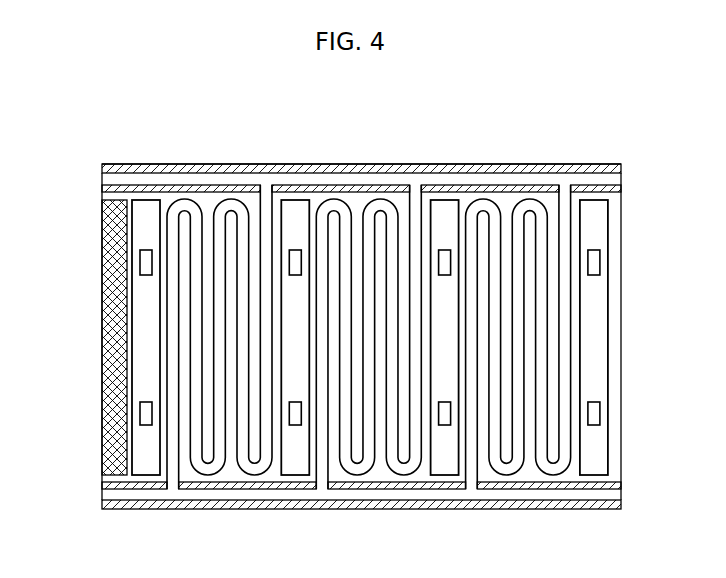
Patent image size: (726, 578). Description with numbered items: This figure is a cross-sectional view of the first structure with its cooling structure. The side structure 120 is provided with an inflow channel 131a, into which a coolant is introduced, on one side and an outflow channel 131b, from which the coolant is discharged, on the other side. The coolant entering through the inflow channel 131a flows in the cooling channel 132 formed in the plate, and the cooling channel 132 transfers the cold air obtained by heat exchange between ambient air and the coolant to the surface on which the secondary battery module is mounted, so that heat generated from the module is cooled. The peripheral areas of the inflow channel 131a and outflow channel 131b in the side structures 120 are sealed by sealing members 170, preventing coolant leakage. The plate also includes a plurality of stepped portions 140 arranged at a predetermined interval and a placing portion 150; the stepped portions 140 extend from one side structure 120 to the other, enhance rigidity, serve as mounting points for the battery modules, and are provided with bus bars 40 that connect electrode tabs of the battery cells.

The side structure 120 is at (622, 167).
The sealing member 170 is at (577, 164).
The outflow channel 131b is at (108, 187).
The inflow channel 131a is at (107, 495).
The placing portion 150 is at (100, 222).
The stepped portion 140 is at (145, 333).
The bus bar 40 is at (140, 410).
The cooling channel 132 is at (197, 467).